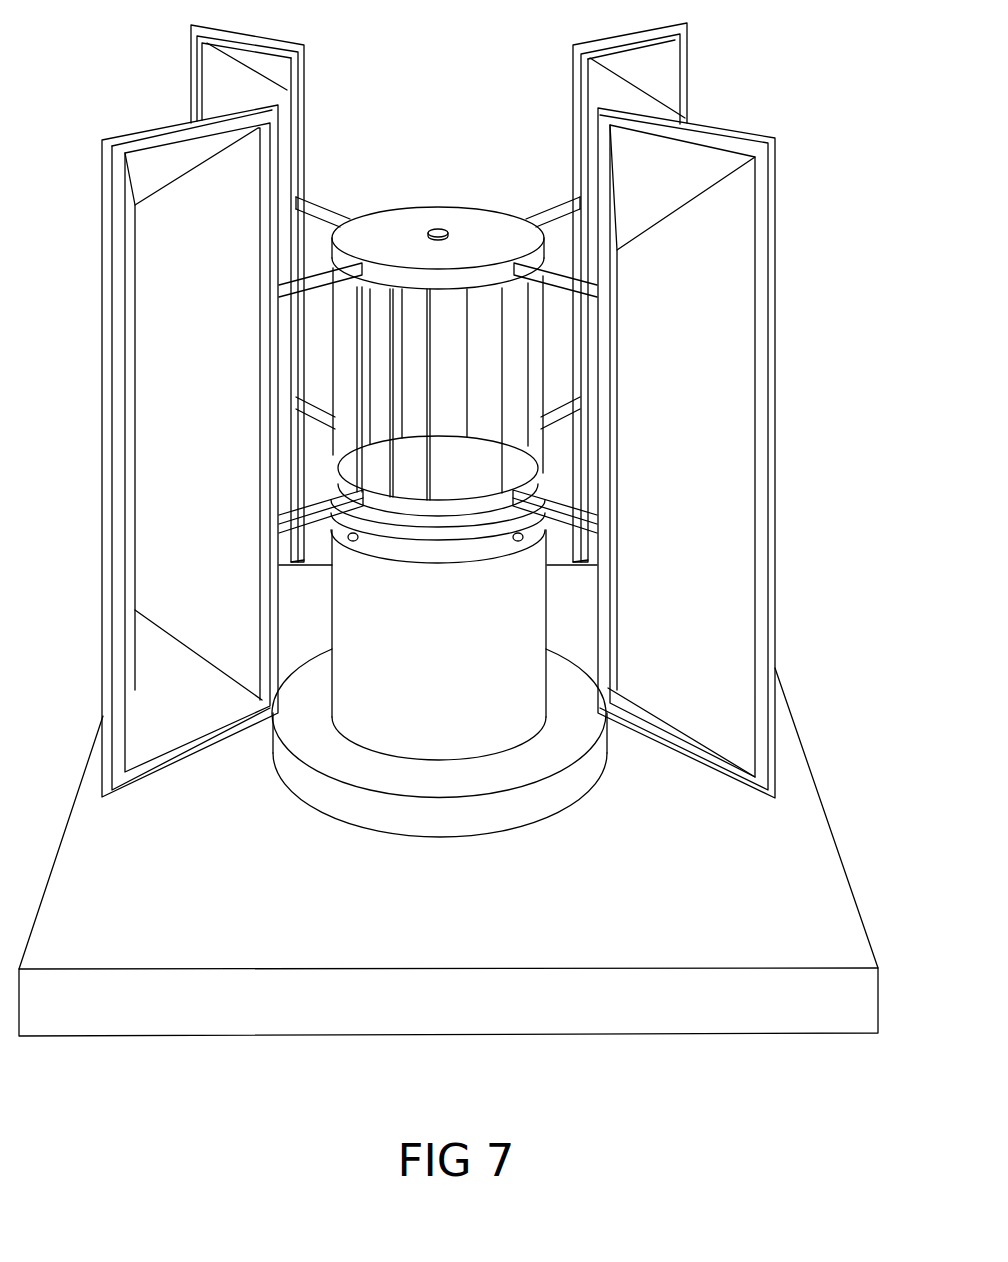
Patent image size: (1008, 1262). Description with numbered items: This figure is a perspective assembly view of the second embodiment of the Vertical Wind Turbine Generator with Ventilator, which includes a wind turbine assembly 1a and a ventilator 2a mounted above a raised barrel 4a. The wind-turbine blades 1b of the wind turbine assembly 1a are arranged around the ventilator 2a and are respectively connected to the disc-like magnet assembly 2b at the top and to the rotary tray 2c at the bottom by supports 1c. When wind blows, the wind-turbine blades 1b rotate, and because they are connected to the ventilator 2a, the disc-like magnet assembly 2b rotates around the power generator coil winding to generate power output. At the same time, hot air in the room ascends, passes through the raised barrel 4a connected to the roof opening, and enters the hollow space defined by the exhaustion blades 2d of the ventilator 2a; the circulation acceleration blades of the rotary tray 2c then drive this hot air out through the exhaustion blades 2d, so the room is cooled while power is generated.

The wind turbine assembly 1a is at (496, 410).
The wind-turbine blades 1b is at (700, 165).
The supports 1c is at (322, 213).
The ventilator 2a is at (510, 391).
The disc-like magnet assembly 2b is at (385, 272).
The rotary tray 2c is at (408, 507).
The exhaustion blades 2d is at (483, 457).
The raised barrel 4a is at (395, 687).